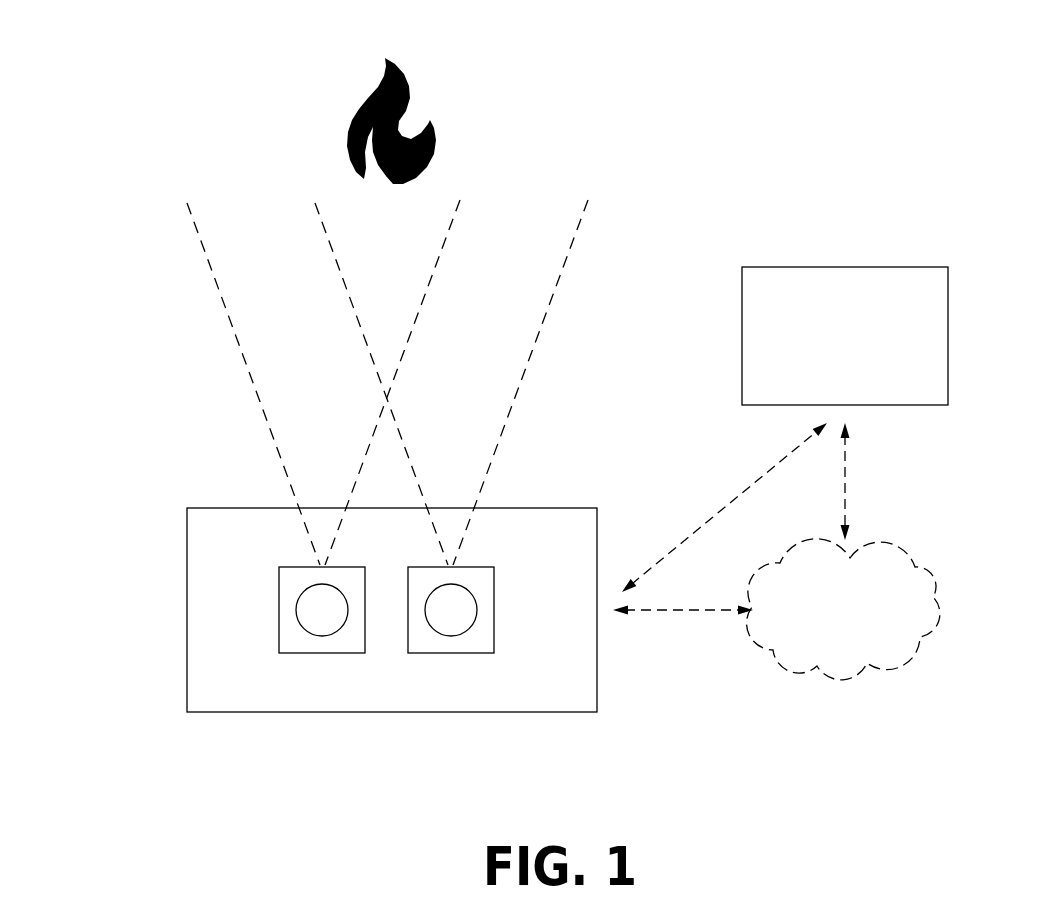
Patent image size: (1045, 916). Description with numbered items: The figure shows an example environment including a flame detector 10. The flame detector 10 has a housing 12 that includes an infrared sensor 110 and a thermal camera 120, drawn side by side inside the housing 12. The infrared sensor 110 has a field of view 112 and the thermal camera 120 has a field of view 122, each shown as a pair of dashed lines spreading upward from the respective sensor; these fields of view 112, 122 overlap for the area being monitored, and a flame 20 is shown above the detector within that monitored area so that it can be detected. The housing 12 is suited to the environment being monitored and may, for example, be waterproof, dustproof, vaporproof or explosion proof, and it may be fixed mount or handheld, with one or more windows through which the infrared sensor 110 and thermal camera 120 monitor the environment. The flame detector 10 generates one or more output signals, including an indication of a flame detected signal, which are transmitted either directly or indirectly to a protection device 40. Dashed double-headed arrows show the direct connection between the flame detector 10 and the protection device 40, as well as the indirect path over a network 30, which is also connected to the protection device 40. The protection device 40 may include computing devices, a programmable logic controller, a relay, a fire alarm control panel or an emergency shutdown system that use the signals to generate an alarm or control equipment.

The flame detector 10 is at (312, 600).
The housing 12 is at (392, 629).
The flame 20 is at (319, 93).
The network 30 is at (843, 609).
The protection device 40 is at (845, 336).
The infrared sensor 110 is at (294, 633).
The field of view 112 is at (276, 382).
The thermal camera 120 is at (476, 633).
The field of view 122 is at (490, 382).